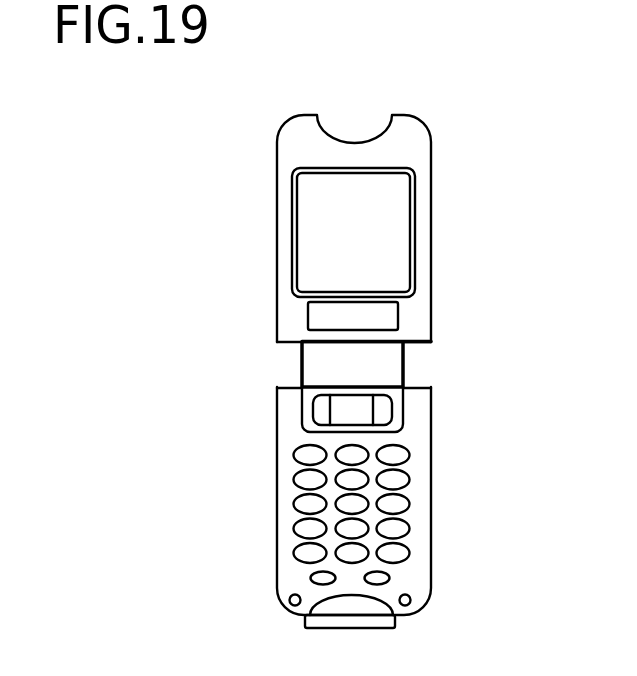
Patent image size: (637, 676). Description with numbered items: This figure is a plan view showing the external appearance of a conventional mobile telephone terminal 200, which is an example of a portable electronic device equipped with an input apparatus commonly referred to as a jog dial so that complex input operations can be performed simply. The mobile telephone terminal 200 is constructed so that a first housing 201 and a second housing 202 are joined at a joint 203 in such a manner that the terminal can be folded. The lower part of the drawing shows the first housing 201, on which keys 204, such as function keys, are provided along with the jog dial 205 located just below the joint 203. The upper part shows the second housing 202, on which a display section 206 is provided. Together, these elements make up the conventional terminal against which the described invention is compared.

The mobile telephone terminal 200 is at (385, 60).
The first housing 201 is at (431, 465).
The second housing 202 is at (432, 190).
The joint 203 is at (415, 360).
The keys 204 is at (268, 442).
The jog dial 205 is at (322, 406).
The display section 206 is at (315, 220).